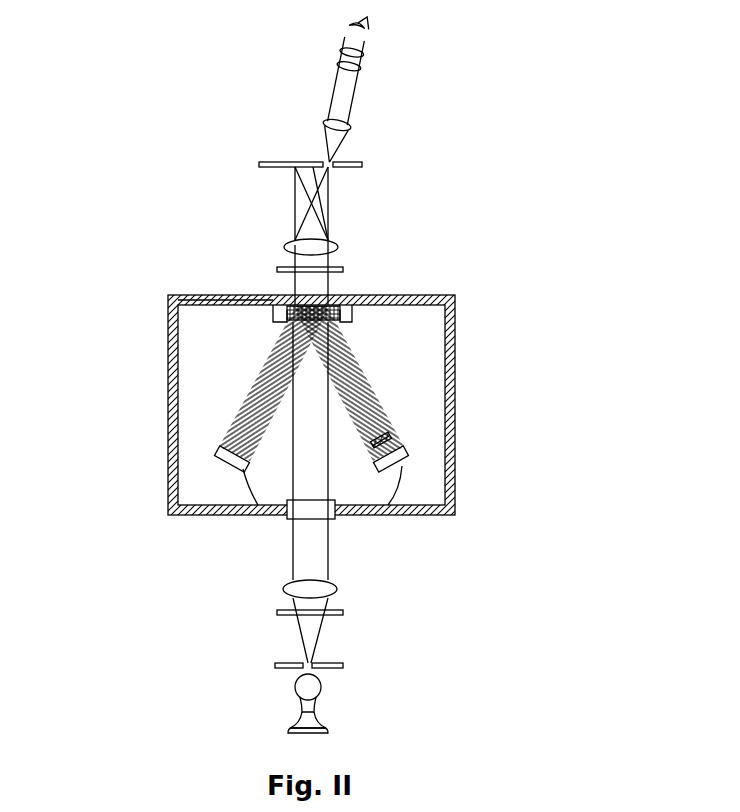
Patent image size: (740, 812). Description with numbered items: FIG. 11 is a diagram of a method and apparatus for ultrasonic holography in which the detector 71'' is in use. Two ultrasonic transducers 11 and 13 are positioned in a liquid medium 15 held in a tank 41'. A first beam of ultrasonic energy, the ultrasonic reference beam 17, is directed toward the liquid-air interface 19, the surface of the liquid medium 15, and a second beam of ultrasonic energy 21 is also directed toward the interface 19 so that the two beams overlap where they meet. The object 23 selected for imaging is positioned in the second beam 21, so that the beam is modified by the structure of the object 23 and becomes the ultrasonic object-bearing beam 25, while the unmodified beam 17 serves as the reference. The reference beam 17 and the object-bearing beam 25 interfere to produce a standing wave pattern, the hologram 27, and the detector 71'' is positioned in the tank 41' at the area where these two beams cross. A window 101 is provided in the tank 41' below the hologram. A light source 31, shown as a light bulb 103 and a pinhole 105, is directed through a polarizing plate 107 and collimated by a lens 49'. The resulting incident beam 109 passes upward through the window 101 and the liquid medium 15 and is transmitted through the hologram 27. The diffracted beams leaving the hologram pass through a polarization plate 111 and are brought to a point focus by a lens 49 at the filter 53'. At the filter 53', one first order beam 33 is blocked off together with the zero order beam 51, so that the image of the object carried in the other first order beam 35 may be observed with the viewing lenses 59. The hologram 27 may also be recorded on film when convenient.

The viewing lenses 59 is at (327, 131).
The filter 53' is at (297, 152).
The first order beam 33 is at (295, 200).
The first order beam 35 is at (328, 200).
The zero order beam 51 is at (321, 216).
The lens 49 is at (316, 237).
The polarization plate 111 is at (278, 268).
The hologram 27 is at (296, 300).
The liquid-air interface 19 is at (221, 296).
The detector 71'' is at (365, 304).
The ultrasonic reference beam 17 is at (157, 362).
The ultrasonic object-bearing beam 25 is at (374, 406).
The ultrasonic transducer 11 is at (250, 541).
The ultrasonic transducer 13 is at (403, 466).
The object 23 is at (390, 440).
The second beam of ultrasonic energy 21 is at (383, 447).
The tank 41' is at (344, 405).
The liquid medium 15 is at (443, 483).
The window 101 is at (336, 518).
The incident beam 109 is at (292, 562).
The lens 49' is at (342, 575).
The polarizing plate 107 is at (280, 610).
The pinhole 105 is at (303, 662).
The light bulb 103 is at (318, 698).
The light source 31 is at (384, 683).